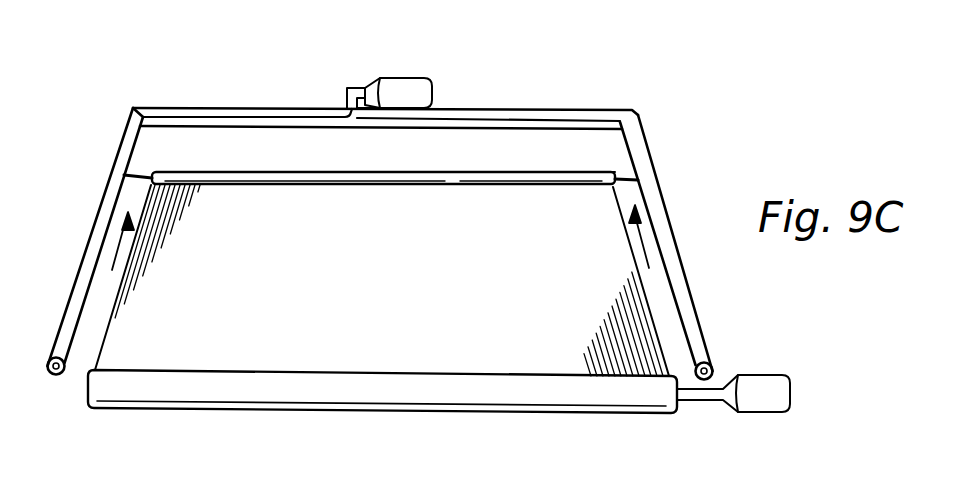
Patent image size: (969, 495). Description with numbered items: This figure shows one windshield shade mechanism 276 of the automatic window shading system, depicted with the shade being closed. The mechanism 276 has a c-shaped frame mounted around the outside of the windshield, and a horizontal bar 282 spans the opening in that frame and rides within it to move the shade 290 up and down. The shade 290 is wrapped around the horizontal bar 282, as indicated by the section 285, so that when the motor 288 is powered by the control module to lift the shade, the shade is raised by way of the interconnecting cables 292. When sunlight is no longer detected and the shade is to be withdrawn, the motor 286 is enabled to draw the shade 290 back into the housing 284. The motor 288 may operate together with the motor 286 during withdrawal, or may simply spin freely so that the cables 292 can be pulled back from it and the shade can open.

The windshield shade mechanism 276 is at (252, 88).
The horizontal bar 282 is at (626, 177).
The housing 284 is at (392, 411).
The section 285 is at (422, 171).
The motor 286 is at (762, 413).
The motor 288 is at (411, 76).
The shade 290 is at (404, 288).
The interconnecting cables 292 is at (289, 122).